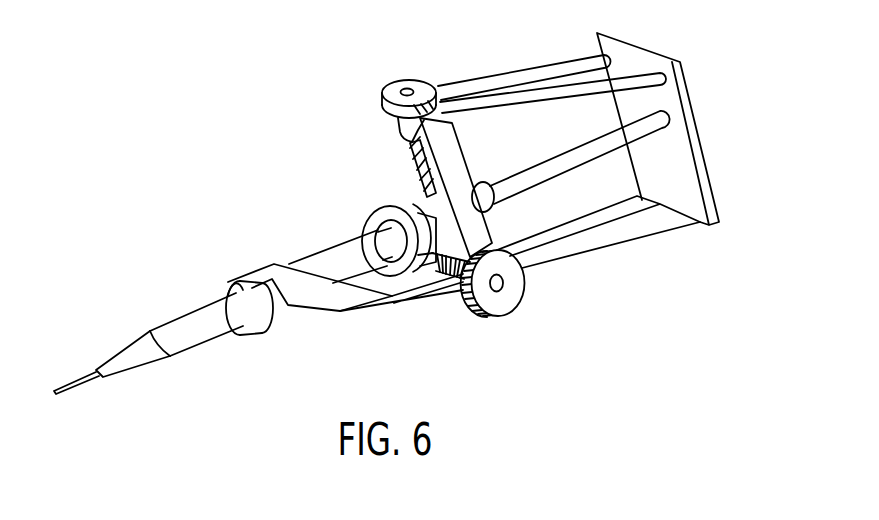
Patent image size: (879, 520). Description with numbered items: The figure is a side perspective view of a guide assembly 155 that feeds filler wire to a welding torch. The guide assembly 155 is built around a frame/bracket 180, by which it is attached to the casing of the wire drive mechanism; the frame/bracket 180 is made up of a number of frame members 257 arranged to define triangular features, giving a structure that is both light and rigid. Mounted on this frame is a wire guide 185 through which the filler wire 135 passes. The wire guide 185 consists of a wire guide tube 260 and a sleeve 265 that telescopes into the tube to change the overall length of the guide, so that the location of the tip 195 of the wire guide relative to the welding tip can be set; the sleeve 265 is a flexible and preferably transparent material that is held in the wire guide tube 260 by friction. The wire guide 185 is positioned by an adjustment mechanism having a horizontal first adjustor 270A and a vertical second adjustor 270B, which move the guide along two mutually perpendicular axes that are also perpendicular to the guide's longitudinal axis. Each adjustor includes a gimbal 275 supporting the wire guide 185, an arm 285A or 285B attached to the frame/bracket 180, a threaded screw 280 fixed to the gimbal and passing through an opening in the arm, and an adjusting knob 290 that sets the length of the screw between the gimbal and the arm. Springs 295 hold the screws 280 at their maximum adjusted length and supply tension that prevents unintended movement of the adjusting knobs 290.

The guide assembly 155 is at (275, 121).
The adjusting knob 290 is at (414, 78).
The frame members 257 is at (571, 61).
The second adjustor 270B is at (378, 141).
The arm 285B is at (455, 126).
The springs 295 is at (408, 166).
The wire guide 185 is at (333, 246).
The sleeve 265 is at (540, 183).
The frame/bracket 180 is at (613, 246).
The gimbal 275 is at (392, 300).
The arm 285A is at (418, 300).
The threaded screw 280 is at (450, 279).
The first adjustor 270A is at (453, 318).
The tip 195 is at (107, 358).
The wire guide tube 260 is at (221, 336).
The filler wire 135 is at (73, 389).